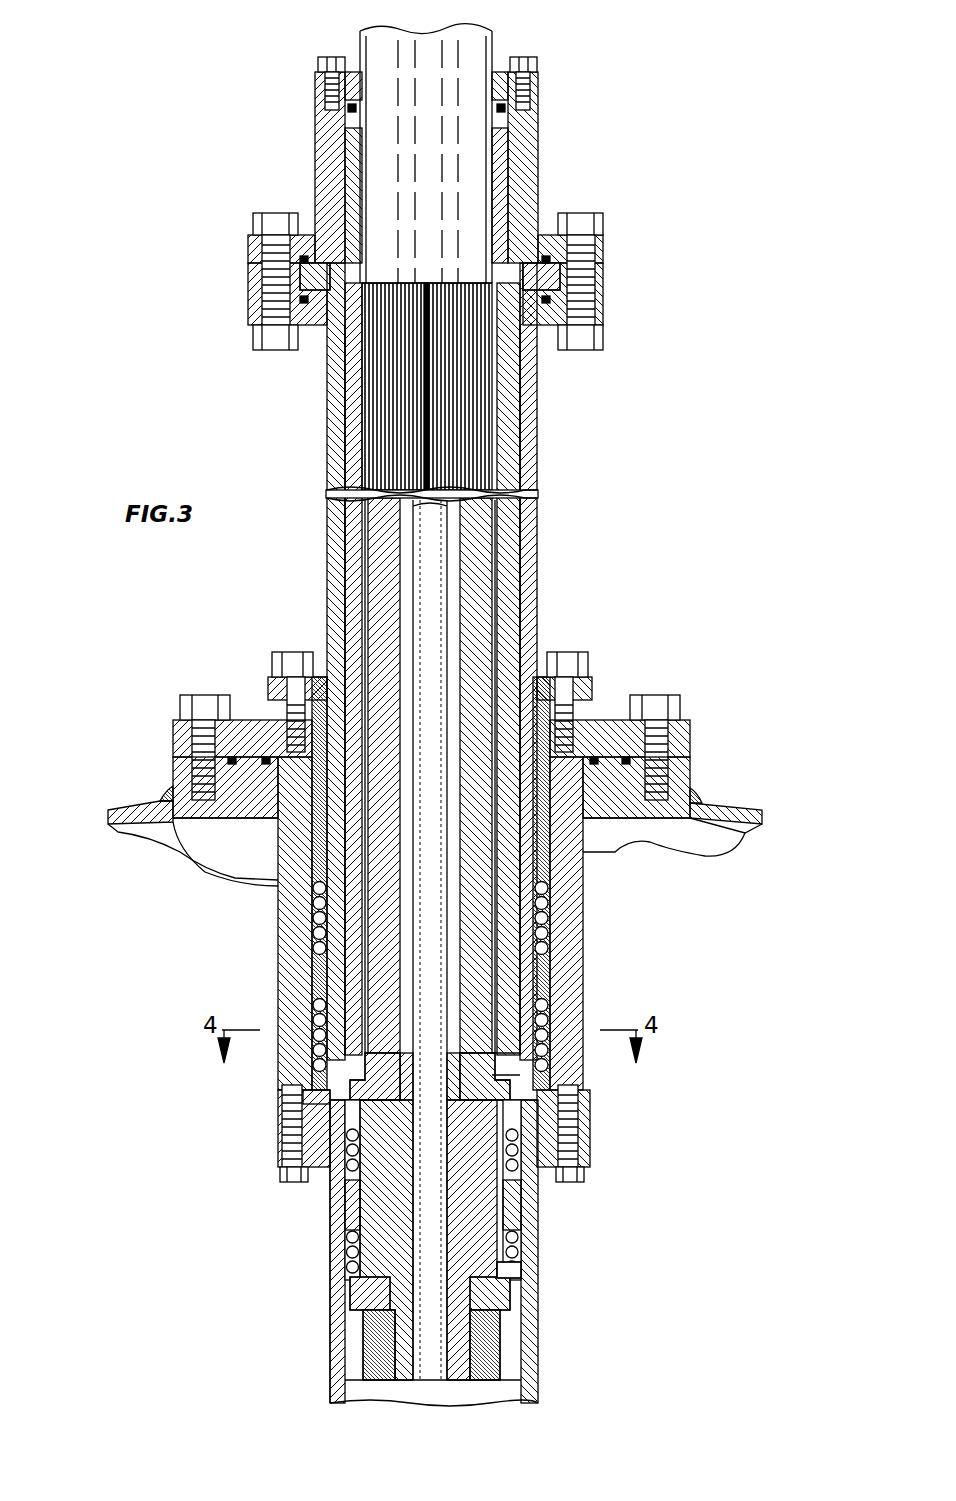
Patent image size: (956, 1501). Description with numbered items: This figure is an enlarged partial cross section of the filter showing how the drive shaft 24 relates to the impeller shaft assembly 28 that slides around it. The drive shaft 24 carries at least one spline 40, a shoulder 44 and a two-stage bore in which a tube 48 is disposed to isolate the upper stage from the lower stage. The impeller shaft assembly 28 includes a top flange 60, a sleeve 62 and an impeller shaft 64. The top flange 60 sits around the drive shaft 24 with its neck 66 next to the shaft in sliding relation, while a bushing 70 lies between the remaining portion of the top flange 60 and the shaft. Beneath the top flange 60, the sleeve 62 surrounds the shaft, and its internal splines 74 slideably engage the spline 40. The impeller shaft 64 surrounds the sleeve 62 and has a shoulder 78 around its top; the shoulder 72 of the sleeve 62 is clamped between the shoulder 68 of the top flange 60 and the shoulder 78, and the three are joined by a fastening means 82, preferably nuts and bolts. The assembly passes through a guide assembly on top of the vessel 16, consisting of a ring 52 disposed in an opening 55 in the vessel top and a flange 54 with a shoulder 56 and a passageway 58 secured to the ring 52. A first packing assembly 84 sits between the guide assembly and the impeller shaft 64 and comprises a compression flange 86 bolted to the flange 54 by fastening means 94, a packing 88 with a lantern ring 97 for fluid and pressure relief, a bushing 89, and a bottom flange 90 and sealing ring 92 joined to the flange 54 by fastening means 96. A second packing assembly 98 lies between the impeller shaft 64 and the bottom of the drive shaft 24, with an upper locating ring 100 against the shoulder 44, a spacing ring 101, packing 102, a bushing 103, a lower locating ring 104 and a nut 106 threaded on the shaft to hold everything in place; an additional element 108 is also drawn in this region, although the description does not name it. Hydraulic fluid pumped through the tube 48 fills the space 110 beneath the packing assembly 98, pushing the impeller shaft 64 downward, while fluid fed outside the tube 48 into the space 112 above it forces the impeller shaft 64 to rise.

The drive shaft 24 is at (488, 43).
The neck 66 is at (508, 115).
The bushing 70 is at (344, 148).
The top flange 60 is at (530, 163).
The shoulder 68 is at (602, 240).
The shoulder 72 is at (304, 272).
The fastening means 82 is at (245, 318).
The shoulder 78 is at (310, 345).
The impeller shaft 64 is at (330, 405).
The sleeve 62 is at (505, 412).
The tube 48 is at (440, 505).
The impeller shaft assembly 28 is at (553, 603).
The fastening means 94 is at (575, 655).
The compression flange 86 is at (590, 685).
The shoulder 56 is at (225, 720).
The opening 55 is at (160, 791).
The ring 52 is at (682, 775).
The vessel 16 is at (160, 802).
The flange 54 is at (235, 832).
The bushing 89 is at (548, 858).
The spline 40 is at (368, 930).
The passageway 58 is at (585, 912).
The internal splines 74 is at (340, 945).
The first packing assembly 84 is at (565, 948).
The packing 88 is at (320, 962).
The lantern ring 97 is at (320, 978).
The space 112 is at (515, 1078).
The upper locating ring 100 is at (300, 1108).
The shoulder 44 is at (525, 1078).
The fastening means 96 is at (280, 1133).
The bottom flange 90 is at (577, 1125).
The sealing ring 92 is at (582, 1162).
The packing 102 is at (520, 1185).
The bushing 103 is at (330, 1203).
The second packing assembly 98 is at (530, 1210).
The spacing ring 101 is at (333, 1245).
The washer 108 is at (500, 1265).
The lower locating ring 104 is at (340, 1300).
The nut 106 is at (330, 1345).
The space 110 is at (355, 1379).